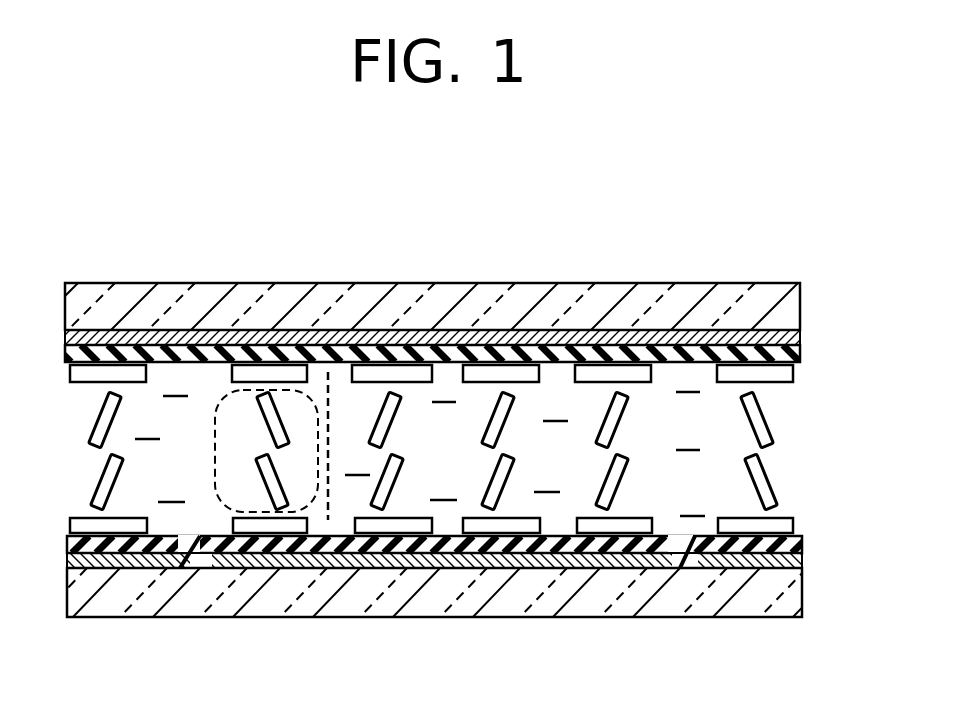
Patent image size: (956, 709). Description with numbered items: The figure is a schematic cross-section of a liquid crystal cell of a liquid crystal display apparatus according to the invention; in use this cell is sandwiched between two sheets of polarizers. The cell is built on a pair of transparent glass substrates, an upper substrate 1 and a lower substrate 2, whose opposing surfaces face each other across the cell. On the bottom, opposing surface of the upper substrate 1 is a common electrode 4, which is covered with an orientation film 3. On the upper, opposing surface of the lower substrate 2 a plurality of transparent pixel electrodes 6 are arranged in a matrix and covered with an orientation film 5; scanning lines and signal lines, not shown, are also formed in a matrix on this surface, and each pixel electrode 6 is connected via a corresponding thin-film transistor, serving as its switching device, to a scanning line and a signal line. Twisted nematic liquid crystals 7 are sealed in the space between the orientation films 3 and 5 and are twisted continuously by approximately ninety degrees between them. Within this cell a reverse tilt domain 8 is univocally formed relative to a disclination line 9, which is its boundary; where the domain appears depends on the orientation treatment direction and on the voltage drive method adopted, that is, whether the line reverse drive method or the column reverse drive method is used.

The upper substrate 1 is at (730, 300).
The lower substrate 2 is at (782, 588).
The orientation film 3 is at (793, 355).
The common electrode 4 is at (787, 336).
The orientation film 5 is at (790, 538).
The transparent pixel electrodes 6 is at (790, 560).
The twisted nematic liquid crystals 7 is at (765, 475).
The reverse tilt domain 8 is at (216, 455).
The disclination line 9 is at (330, 478).